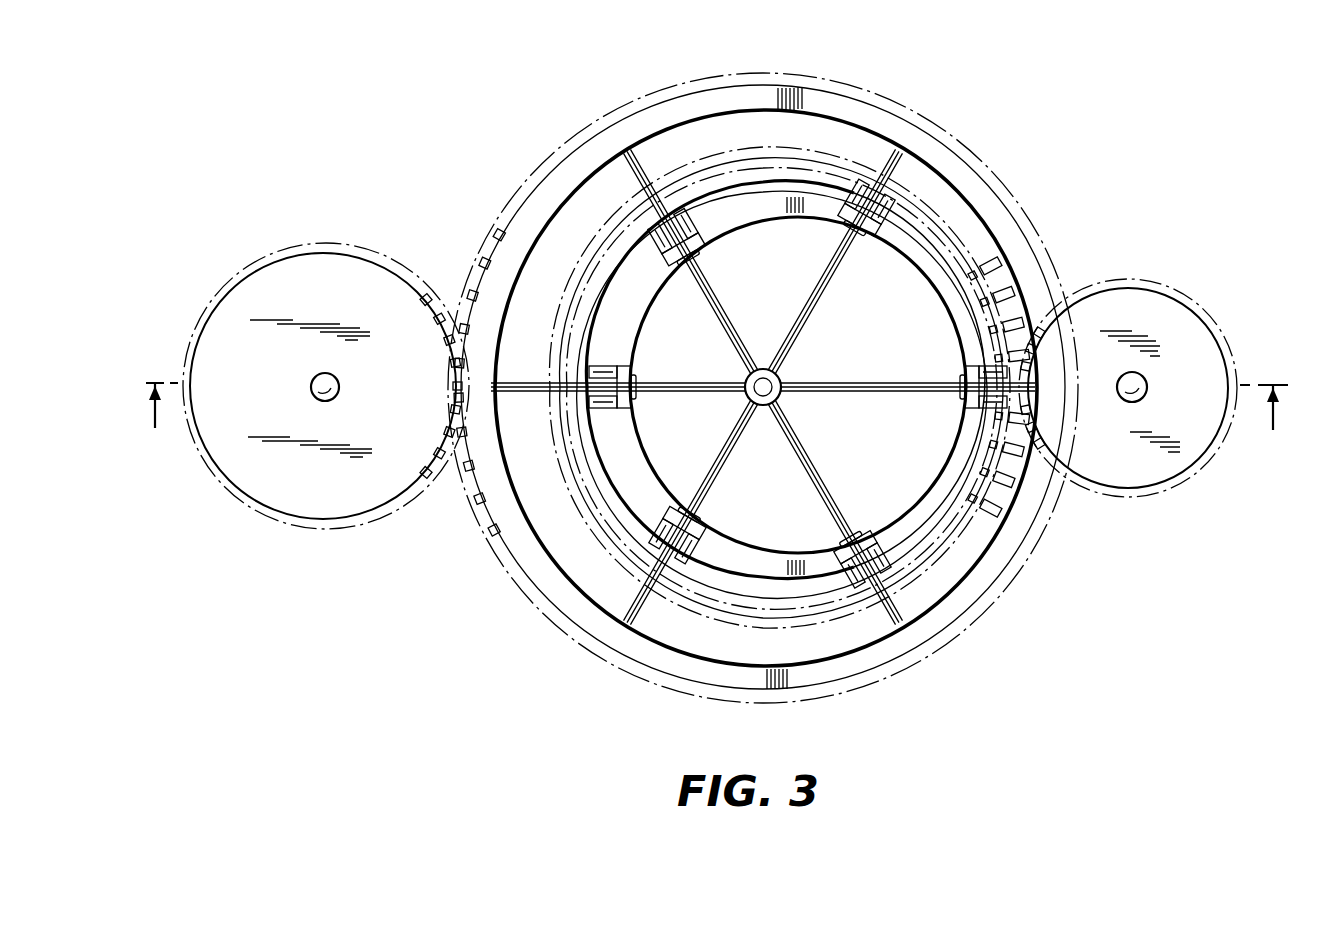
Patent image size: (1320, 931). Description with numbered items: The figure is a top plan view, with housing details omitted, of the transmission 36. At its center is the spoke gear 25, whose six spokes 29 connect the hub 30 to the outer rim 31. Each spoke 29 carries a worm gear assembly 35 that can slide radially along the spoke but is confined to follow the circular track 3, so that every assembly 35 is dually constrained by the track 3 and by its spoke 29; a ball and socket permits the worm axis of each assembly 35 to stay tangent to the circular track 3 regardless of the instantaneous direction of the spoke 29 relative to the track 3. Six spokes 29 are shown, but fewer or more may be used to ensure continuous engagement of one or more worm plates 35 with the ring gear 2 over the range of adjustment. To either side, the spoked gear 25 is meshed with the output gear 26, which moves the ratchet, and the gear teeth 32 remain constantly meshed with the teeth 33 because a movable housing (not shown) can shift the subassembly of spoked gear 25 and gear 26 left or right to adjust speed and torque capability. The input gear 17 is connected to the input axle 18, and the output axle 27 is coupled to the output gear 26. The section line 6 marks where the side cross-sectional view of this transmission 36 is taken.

The ring gear 2 is at (703, 180).
The circular track 3 is at (776, 210).
The section line 6- 6 is at (714, 433).
The input gear 17 is at (1172, 314).
The input axle 18 is at (1147, 386).
The spoke gear 25 is at (1066, 264).
The output gear 26 is at (304, 492).
The output axle 27 is at (318, 386).
The spokes 29 is at (812, 323).
The hub 30 is at (766, 368).
The rim 31 is at (985, 205).
The gear teeth 32 is at (480, 262).
The teeth 33 is at (434, 272).
The worm gear assembly 35 is at (667, 268).
The transmission 36 is at (1018, 102).